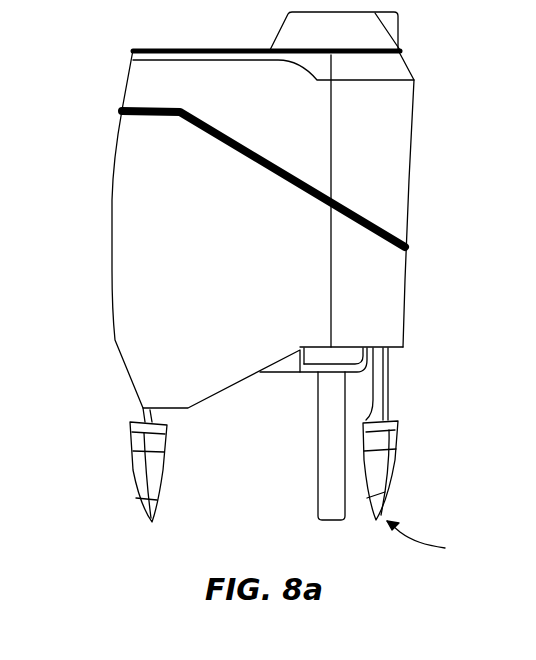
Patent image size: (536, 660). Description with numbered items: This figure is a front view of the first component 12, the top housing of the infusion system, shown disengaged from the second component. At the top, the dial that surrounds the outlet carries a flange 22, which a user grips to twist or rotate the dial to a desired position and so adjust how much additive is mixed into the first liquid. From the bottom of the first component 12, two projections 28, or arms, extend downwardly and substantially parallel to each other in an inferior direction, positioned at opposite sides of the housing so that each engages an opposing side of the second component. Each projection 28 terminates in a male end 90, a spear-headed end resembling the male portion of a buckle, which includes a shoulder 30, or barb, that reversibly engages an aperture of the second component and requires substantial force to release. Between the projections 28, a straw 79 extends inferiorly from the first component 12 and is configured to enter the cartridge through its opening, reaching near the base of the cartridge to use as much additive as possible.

The first component 12 is at (393, 181).
The flange 22 is at (401, 22).
The projection 28 is at (389, 386).
The shoulder 30 is at (146, 418).
The straw 79 is at (331, 458).
The male end 90 is at (429, 545).